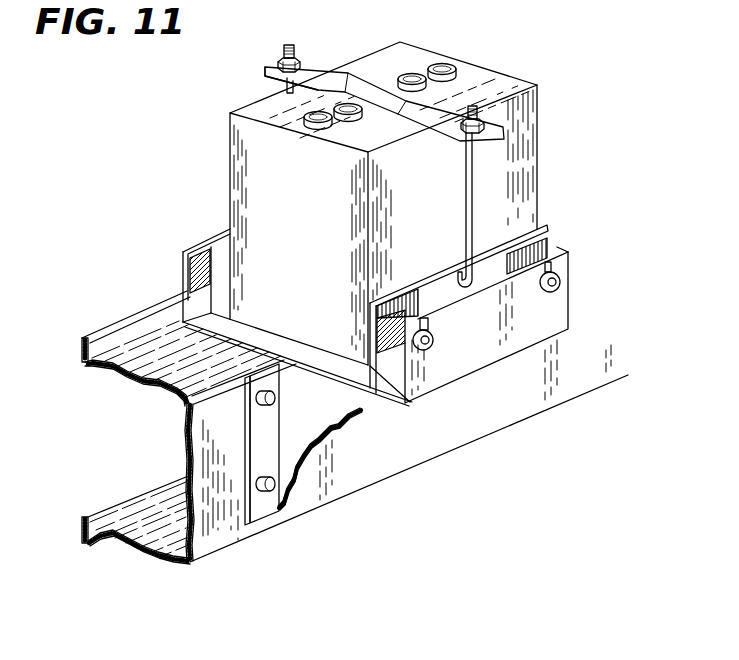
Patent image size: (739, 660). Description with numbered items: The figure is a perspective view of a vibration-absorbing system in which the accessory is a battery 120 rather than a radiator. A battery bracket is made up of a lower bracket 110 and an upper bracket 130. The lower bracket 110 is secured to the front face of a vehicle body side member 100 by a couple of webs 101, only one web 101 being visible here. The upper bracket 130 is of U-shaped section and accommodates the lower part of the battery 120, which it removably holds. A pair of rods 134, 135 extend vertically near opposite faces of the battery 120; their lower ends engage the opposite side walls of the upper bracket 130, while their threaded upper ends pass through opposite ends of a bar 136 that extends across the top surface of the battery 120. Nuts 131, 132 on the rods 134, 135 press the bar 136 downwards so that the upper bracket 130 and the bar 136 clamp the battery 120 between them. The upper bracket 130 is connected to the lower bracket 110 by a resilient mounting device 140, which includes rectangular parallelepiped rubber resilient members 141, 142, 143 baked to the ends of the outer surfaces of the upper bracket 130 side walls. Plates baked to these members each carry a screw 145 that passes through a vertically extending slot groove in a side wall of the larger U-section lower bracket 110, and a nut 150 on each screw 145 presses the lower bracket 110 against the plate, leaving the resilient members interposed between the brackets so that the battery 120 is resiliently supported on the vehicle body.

The vehicle body side member 100 is at (203, 451).
The web 101 is at (341, 413).
The lower bracket 110 is at (488, 354).
The battery 120 is at (527, 165).
The upper bracket 130 is at (542, 236).
The nut 131 is at (502, 118).
The nut 132 is at (283, 57).
The rod 134 is at (466, 204).
The rod 135 is at (266, 80).
The bar 136 is at (374, 84).
The resilient mounting device 140 is at (520, 318).
The resilient member 141 is at (551, 241).
The resilient member 142 is at (380, 319).
The resilient member 143 is at (203, 279).
The screw 145 is at (434, 340).
The nut 150 is at (419, 350).